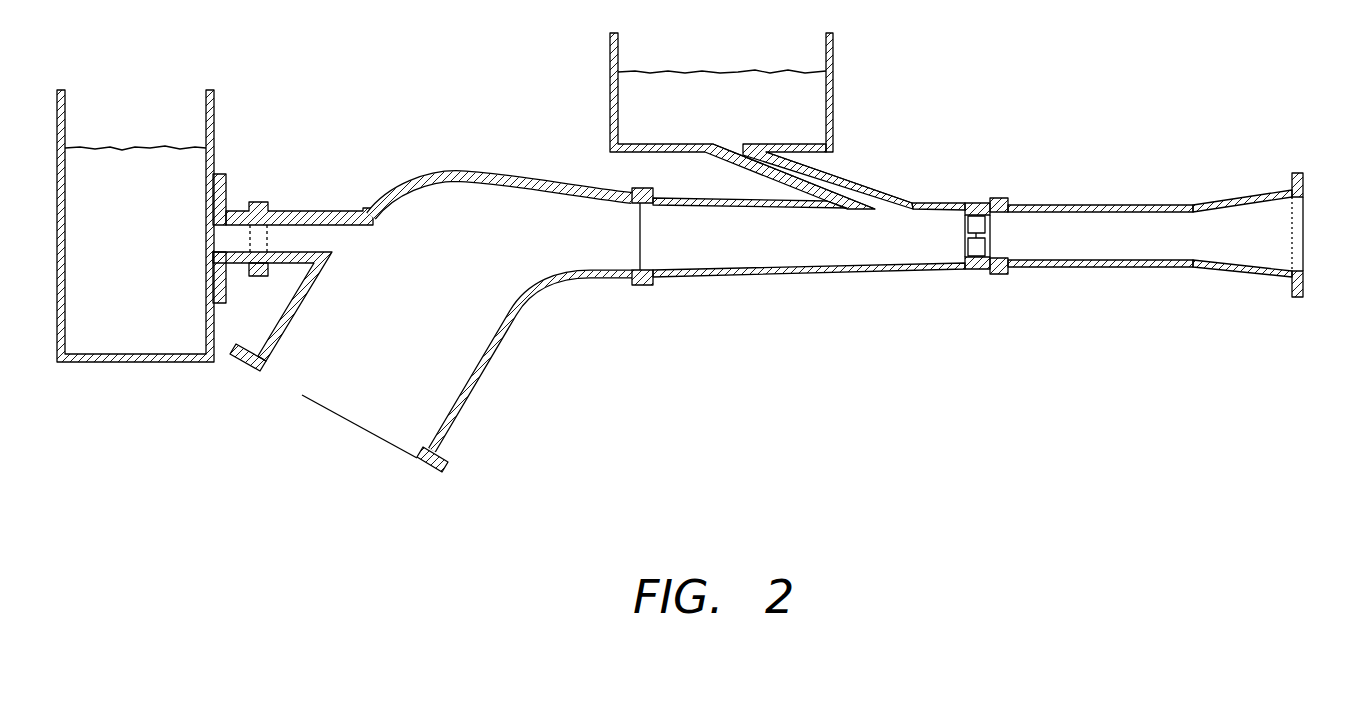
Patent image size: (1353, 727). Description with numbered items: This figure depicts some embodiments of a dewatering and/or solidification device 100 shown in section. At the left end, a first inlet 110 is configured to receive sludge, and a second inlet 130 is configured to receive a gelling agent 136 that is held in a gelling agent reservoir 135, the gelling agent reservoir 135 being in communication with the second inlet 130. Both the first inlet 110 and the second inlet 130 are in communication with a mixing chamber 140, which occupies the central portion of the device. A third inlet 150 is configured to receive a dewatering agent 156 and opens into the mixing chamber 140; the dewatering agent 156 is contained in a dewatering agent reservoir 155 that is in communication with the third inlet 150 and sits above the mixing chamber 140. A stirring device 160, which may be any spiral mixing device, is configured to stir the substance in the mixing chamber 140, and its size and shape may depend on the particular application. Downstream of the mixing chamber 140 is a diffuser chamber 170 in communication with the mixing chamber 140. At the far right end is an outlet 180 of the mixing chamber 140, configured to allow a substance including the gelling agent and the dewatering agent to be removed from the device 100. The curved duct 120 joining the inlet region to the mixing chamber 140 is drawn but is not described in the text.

The device 100 is at (807, 405).
The first inlet 110 is at (277, 383).
The inlet duct 120 is at (403, 400).
The second inlet 130 is at (233, 238).
The gelling agent reservoir 135 is at (212, 89).
The gelling agent 136 is at (167, 158).
The mixing chamber 140 is at (765, 242).
The third inlet 150 is at (837, 167).
The dewatering agent reservoir 155 is at (610, 33).
The dewatering agent 156 is at (800, 98).
The stirring device 160 is at (977, 247).
The diffuser chamber 170 is at (1133, 222).
The outlet 180 is at (1292, 237).